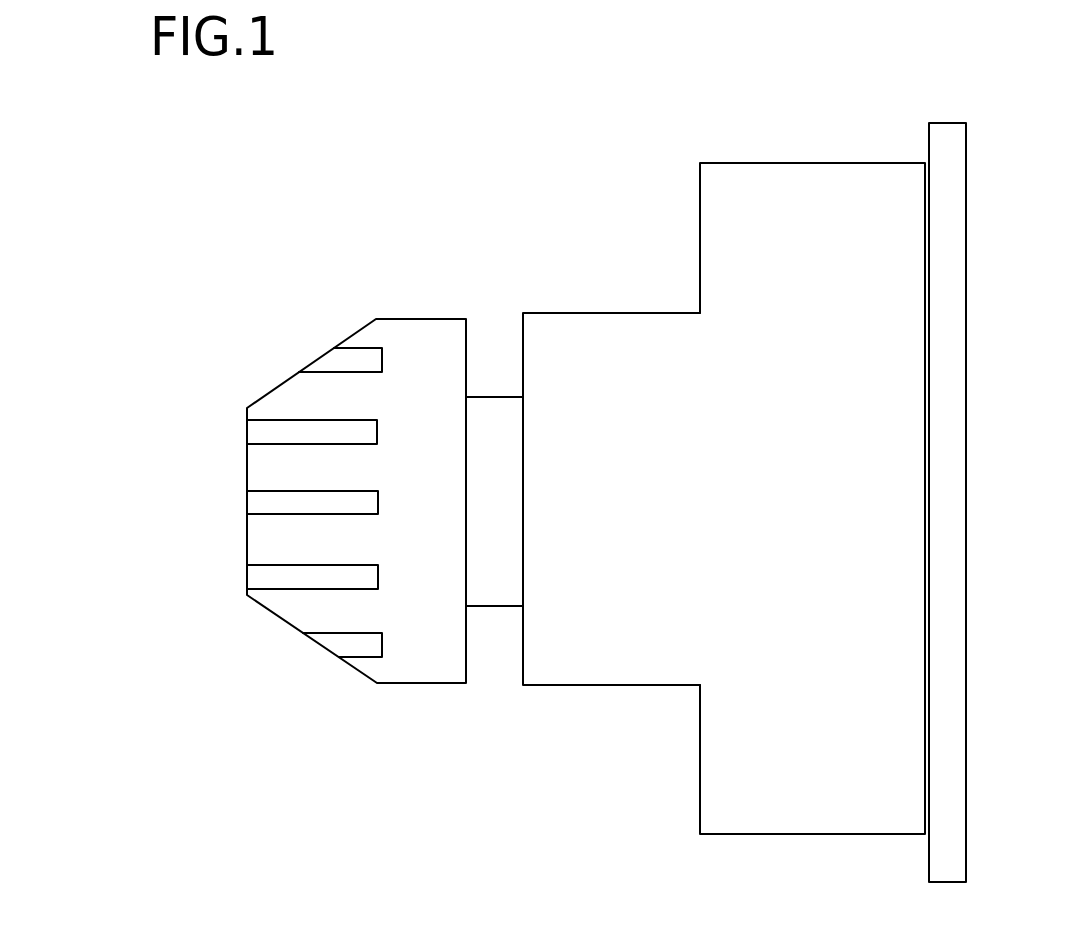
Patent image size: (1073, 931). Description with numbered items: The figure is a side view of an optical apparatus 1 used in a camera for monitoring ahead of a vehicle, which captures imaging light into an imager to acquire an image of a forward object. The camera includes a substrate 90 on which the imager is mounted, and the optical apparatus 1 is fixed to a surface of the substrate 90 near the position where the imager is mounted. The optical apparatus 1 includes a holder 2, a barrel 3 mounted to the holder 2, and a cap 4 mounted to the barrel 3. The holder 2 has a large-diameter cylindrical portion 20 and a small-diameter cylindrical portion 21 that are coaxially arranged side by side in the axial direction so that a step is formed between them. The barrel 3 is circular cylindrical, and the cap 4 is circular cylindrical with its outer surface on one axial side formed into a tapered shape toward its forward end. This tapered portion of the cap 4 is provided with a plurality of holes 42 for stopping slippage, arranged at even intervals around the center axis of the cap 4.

The optical apparatus 1 is at (818, 125).
The holder 2 is at (743, 93).
The large-diameter cylindrical portion 20 is at (765, 163).
The small-diameter cylindrical portion 21 is at (632, 320).
The barrel 3 is at (495, 567).
The cap 4 is at (403, 318).
The holes 42 is at (332, 360).
The substrate 90 is at (947, 516).